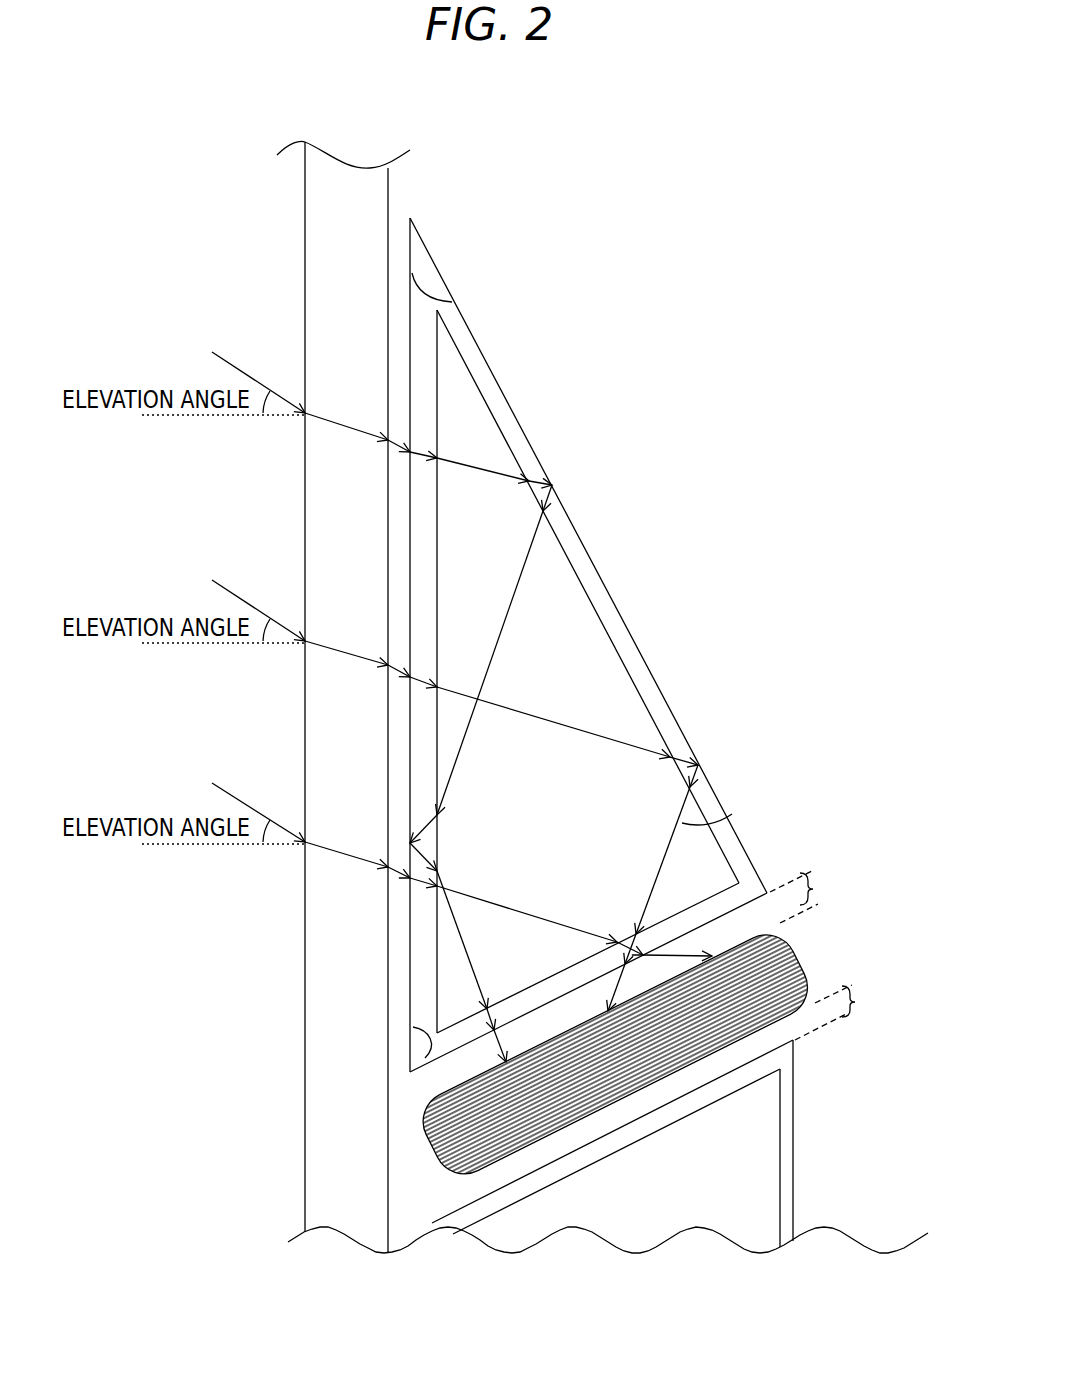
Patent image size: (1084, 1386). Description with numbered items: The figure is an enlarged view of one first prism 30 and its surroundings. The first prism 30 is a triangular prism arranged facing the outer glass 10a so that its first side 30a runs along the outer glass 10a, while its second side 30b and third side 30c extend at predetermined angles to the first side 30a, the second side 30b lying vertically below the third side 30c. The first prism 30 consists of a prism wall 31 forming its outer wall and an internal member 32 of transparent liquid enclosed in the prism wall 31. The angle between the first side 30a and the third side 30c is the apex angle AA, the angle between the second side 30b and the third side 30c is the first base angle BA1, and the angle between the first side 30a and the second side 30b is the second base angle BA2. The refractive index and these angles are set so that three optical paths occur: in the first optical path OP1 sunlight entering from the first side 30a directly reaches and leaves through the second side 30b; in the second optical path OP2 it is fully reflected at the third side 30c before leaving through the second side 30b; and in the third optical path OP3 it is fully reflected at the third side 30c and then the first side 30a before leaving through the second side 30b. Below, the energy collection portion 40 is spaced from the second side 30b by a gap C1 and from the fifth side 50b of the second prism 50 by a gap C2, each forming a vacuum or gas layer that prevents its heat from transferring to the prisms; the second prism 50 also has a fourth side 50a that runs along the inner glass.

The outer glass 10a is at (320, 262).
The apex angle AA is at (455, 298).
The first prism 30 is at (539, 764).
The first side 30a is at (420, 603).
The second side 30b is at (517, 994).
The third side 30c is at (648, 684).
The prism wall 31 is at (627, 647).
The internal member 32 is at (553, 603).
The first optical path OP1 is at (268, 830).
The second optical path OP2 is at (268, 632).
The third optical path OP3 is at (268, 405).
The first base angle BA1 is at (740, 858).
The second base angle BA2 is at (413, 1027).
The gap C1 is at (811, 897).
The gap C2 is at (846, 1012).
The energy collection portion 40 is at (677, 947).
The second prism 50 is at (674, 1167).
The fourth side 50a is at (790, 1197).
The fifth side 50b is at (690, 1085).